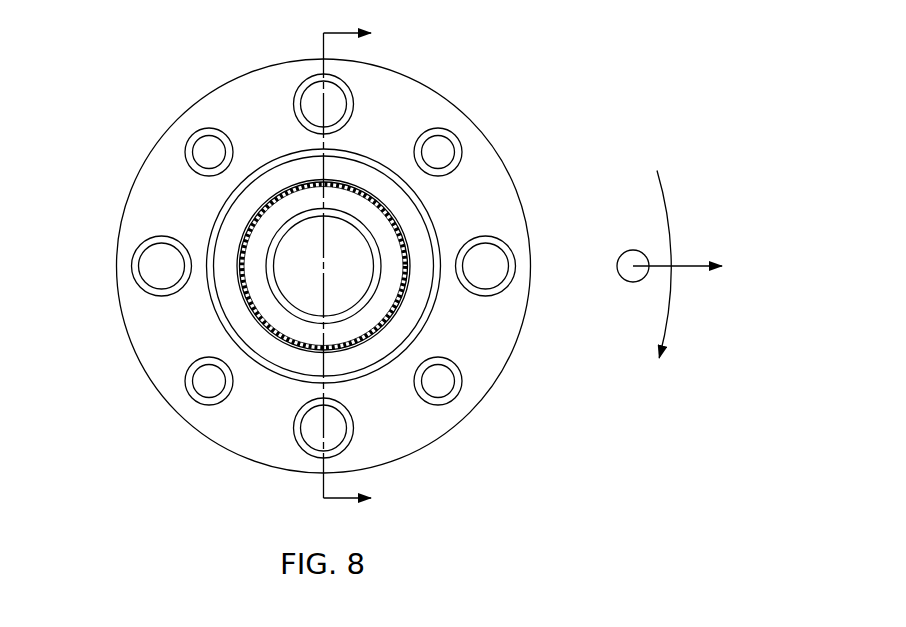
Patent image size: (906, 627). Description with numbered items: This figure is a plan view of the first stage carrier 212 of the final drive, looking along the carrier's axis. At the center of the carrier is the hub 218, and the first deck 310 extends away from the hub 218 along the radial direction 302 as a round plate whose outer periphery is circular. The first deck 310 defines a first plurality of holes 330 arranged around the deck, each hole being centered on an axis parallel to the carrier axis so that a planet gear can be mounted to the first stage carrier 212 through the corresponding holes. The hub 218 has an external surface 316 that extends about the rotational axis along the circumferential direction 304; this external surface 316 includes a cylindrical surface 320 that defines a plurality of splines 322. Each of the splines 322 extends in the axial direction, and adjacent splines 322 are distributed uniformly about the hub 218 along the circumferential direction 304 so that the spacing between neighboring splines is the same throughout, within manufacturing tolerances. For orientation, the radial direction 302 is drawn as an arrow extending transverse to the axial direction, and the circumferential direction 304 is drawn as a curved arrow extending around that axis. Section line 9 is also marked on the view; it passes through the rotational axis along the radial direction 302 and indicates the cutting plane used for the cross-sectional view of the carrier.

The first stage carrier 212 is at (524, 41).
The first deck 310 is at (160, 203).
The first plurality of holes 330 is at (293, 106).
The hub 218 is at (210, 319).
The external surface 316 is at (408, 313).
The cylindrical surface 320 is at (342, 350).
The splines 322 is at (468, 448).
The radial direction 302 is at (690, 266).
The circumferential direction 304 is at (657, 280).
The section line 9- 9 is at (357, 266).